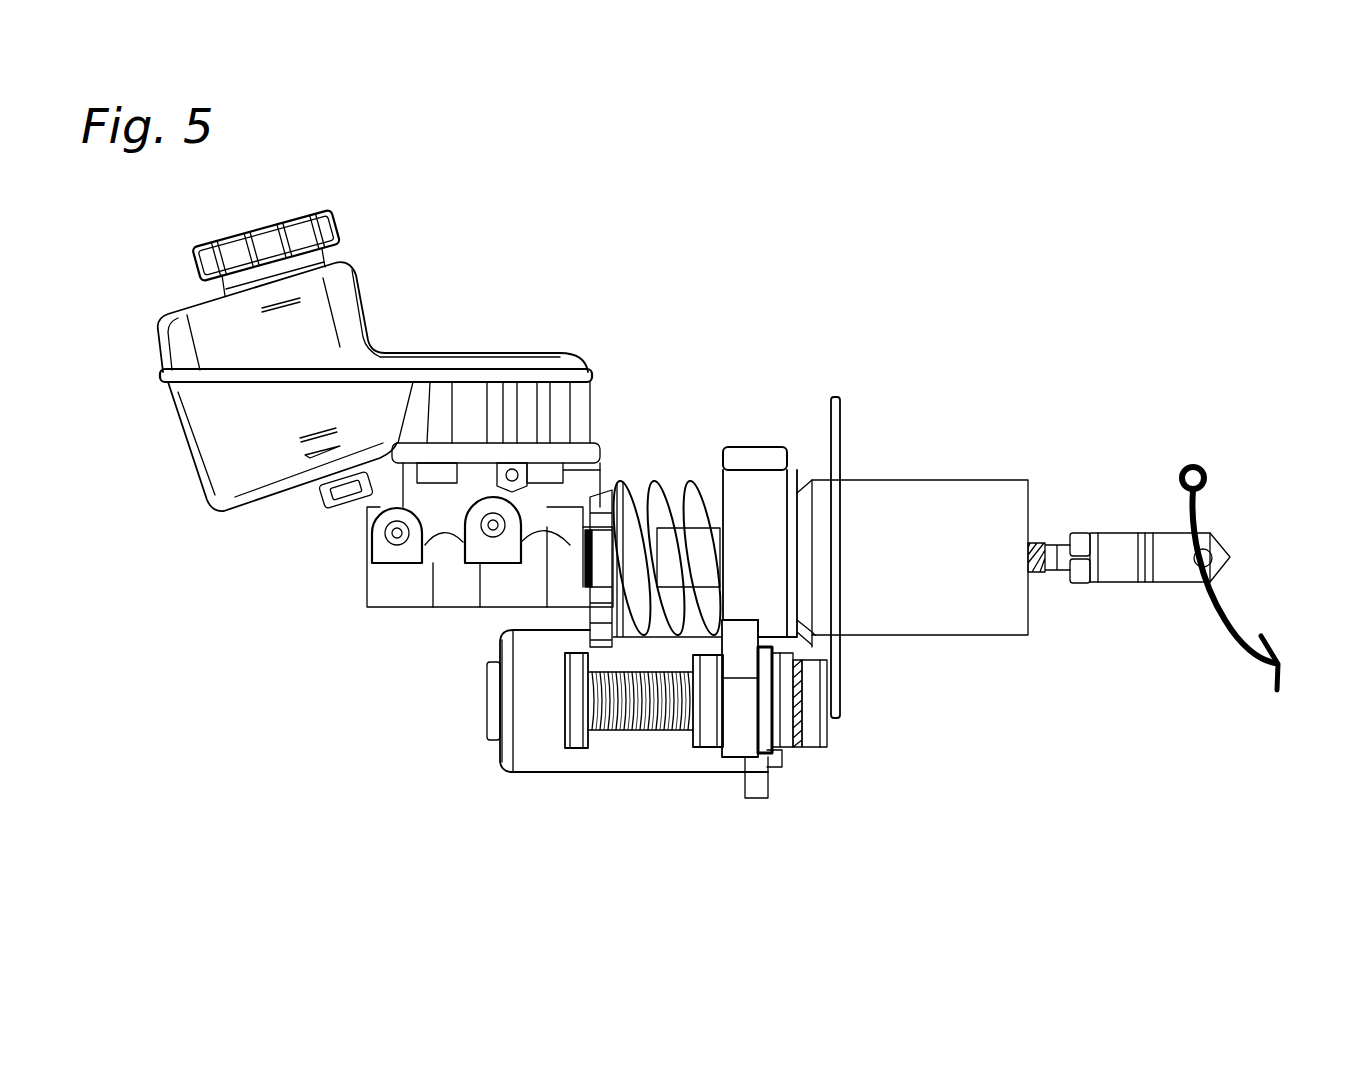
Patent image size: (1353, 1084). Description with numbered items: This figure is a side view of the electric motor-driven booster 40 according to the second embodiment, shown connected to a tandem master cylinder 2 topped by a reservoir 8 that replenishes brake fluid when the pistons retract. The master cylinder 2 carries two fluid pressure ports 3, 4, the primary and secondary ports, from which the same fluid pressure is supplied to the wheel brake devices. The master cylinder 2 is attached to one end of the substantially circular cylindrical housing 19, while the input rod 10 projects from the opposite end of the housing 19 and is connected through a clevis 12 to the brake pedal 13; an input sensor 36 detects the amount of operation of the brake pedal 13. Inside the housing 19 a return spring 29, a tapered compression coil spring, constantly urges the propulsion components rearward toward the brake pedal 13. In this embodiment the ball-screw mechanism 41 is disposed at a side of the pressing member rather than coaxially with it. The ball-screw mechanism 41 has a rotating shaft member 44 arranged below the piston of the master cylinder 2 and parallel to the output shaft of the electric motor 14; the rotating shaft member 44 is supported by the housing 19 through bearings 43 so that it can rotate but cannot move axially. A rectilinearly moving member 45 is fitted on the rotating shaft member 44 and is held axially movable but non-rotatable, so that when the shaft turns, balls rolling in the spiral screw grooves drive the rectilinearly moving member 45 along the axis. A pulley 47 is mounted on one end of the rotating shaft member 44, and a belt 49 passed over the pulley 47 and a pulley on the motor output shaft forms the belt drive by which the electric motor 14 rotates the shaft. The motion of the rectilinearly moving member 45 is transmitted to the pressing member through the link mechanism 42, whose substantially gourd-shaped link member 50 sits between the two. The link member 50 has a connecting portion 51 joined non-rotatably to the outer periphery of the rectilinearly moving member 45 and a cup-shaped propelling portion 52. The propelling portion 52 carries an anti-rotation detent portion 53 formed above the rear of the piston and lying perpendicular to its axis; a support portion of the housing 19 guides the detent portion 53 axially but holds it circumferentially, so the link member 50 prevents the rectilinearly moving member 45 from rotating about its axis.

The master cylinder 2 is at (451, 464).
The fluid pressure port 3 is at (397, 507).
The fluid pressure port 4 is at (482, 480).
The reservoir 8 is at (362, 293).
The input rod 10 is at (1063, 553).
The clevis 12 is at (1173, 572).
The brake pedal 13 is at (1227, 613).
The electric motor 14 is at (532, 762).
The housing 19 is at (960, 497).
The return spring 29 is at (622, 477).
The input sensor 36 is at (1193, 462).
The electric motor-driven booster 40 is at (911, 374).
The ball-screw mechanism 41 is at (718, 778).
The link mechanism 42 is at (811, 416).
The bearing 43 is at (580, 742).
The rotating shaft member 44 is at (653, 730).
The rectilinearly moving member 45 is at (703, 735).
The pulley 47 is at (830, 733).
The belt 49 is at (812, 735).
The link member 50 is at (815, 650).
The connecting portion 51 is at (728, 742).
The propelling portion 52 is at (752, 480).
The detent portion 53 is at (733, 460).